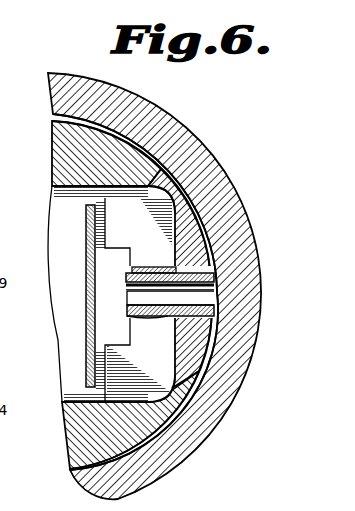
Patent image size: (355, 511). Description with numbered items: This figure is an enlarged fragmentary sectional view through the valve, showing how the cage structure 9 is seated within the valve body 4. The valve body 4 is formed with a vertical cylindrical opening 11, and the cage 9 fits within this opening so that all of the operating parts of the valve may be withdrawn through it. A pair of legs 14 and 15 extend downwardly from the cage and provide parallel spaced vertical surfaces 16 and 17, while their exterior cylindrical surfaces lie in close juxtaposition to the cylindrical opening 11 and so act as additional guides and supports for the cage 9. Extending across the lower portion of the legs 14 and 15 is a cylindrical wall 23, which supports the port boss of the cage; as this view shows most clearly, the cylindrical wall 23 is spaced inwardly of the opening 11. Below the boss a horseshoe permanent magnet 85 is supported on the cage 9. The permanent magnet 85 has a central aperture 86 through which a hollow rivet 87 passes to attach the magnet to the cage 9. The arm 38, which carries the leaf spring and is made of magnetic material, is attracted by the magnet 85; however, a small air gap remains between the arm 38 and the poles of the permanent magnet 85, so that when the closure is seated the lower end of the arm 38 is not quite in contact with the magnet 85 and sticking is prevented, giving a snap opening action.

The valve body 4 is at (184, 140).
The cage structure 9 is at (107, 133).
The cylindrical opening 11 is at (186, 186).
The leg 14 is at (70, 436).
The leg 15 is at (57, 148).
The vertical surface 16 is at (60, 185).
The vertical surface 17 is at (66, 402).
The cylindrical wall 23 is at (188, 228).
The arm 38 is at (87, 232).
The horseshoe permanent magnet 85 is at (163, 362).
The central aperture 86 is at (167, 305).
The hollow rivet 87 is at (213, 286).